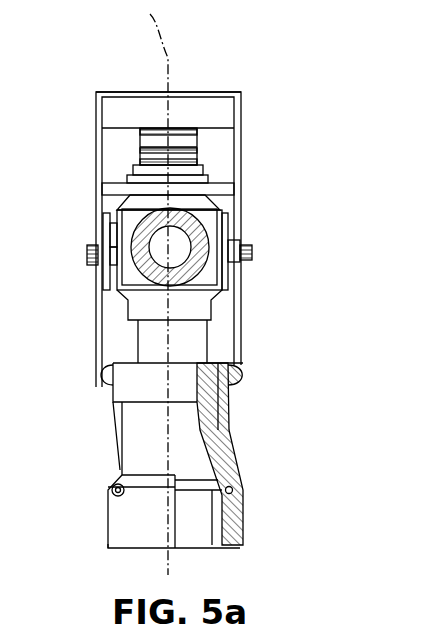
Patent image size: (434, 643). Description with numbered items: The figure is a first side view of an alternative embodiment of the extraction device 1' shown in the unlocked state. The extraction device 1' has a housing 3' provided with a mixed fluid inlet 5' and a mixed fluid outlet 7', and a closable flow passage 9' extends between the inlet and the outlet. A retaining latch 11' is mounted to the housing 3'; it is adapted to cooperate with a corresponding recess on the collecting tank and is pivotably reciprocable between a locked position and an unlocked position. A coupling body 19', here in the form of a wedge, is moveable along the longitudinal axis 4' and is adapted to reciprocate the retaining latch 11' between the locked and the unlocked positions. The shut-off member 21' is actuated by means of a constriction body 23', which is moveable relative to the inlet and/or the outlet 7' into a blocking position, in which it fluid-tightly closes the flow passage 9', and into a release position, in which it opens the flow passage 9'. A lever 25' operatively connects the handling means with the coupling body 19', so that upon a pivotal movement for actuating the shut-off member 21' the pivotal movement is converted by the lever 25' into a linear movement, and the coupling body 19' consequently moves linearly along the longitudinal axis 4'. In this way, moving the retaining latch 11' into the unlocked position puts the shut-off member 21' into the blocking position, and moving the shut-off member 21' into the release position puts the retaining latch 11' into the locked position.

The extraction device 1' is at (334, 109).
The housing 3' is at (144, 511).
The longitudinal axis 4' is at (147, 287).
The mixed fluid inlet 5' is at (239, 531).
The mixed fluid outlet 7' is at (195, 200).
The closable flow passage 9' is at (225, 286).
The retaining latch 11' is at (273, 486).
The coupling body 19' is at (214, 454).
The shut-off member 21' is at (79, 275).
The constriction body 23' is at (221, 245).
The lever 25' is at (274, 271).